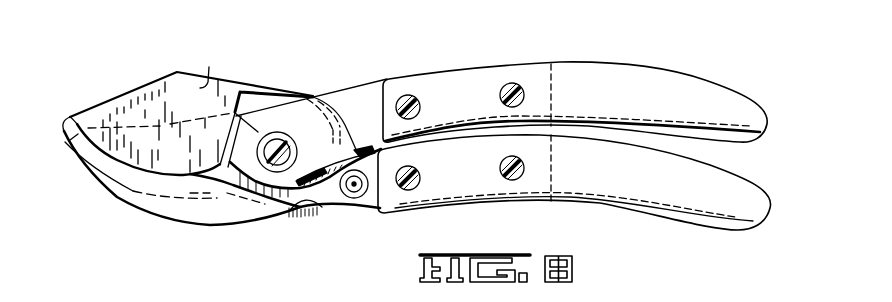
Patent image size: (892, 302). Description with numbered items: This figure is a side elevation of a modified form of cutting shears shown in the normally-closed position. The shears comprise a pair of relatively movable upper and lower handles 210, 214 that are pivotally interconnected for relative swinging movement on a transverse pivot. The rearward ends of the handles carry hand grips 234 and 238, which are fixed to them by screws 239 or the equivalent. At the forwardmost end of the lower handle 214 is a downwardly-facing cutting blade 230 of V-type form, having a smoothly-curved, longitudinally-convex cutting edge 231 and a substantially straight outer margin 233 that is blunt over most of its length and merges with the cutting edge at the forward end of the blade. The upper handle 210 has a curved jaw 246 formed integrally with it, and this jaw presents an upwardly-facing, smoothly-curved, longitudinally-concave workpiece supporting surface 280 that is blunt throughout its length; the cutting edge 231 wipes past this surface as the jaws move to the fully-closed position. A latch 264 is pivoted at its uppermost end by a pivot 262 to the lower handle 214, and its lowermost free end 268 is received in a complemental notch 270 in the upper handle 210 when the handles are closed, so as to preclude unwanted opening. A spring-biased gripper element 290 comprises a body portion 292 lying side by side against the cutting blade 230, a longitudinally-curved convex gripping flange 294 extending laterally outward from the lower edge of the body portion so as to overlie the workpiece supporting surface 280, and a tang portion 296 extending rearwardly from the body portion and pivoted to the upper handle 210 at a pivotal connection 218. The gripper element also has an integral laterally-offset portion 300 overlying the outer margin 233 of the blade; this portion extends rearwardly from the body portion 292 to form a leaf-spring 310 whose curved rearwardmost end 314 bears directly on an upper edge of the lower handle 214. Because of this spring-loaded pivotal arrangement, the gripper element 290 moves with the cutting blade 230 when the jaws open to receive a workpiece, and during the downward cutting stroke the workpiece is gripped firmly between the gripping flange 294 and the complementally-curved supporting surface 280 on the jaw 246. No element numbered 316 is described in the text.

The upper handle 210 is at (340, 100).
The lower handle 214 is at (380, 212).
The pivotal connection 218 is at (272, 132).
The cutting blade 230 is at (80, 143).
The cutting edge 231 is at (146, 198).
The outer margin 233 is at (134, 121).
The hand grip 234 is at (625, 75).
The hand grip 238 is at (625, 196).
The screws 239 is at (408, 95).
The curved jaw 246 is at (173, 222).
The pivot 262 is at (363, 178).
The latch 264 is at (338, 202).
The free end 268 is at (290, 210).
The notch 270 is at (322, 195).
The workpiece supporting surface 280 is at (143, 160).
The spring-biased gripper element 290 is at (227, 7).
The body portion 292 is at (205, 113).
The gripping flange 294 is at (112, 164).
The tang portion 296 is at (233, 174).
The laterally-offset portion 300 is at (211, 68).
The leaf-spring 310 is at (307, 93).
The rearwardmost end 314 is at (363, 148).
The stop rail 316 is at (408, 123).